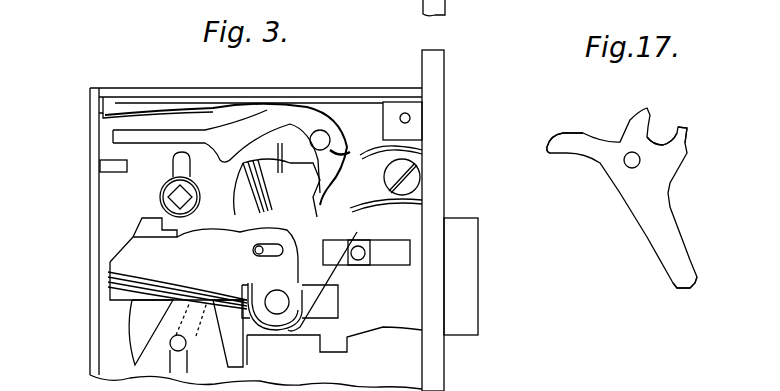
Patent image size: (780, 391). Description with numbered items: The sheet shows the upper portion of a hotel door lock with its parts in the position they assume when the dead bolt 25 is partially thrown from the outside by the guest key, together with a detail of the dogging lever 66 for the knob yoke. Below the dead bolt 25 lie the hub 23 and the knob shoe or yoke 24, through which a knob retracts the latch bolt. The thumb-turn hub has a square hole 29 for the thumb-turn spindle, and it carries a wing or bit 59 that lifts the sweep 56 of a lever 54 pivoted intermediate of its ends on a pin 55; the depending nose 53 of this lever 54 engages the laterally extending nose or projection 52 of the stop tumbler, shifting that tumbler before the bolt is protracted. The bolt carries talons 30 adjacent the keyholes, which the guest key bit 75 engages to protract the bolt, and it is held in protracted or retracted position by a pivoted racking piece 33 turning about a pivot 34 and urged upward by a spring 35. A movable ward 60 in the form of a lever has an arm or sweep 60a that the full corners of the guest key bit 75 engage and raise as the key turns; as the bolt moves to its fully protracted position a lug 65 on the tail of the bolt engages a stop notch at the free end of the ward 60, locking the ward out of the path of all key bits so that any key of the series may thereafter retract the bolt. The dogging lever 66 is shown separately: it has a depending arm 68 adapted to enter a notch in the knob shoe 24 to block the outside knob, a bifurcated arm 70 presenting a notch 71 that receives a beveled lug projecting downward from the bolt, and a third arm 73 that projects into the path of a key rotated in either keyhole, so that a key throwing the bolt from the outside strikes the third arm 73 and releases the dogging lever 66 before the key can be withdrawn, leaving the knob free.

In FIG. 3, the hub 23 is at (93, 14).
In FIG. 3, the knob shoe or yoke 24 is at (183, 0).
In FIG. 3, the dead bolt 25 is at (470, 282).
In FIG. 3, the square hole 29 is at (162, 202).
In FIG. 3, the talons 30 is at (157, 327).
In FIG. 3, the racking piece 33 is at (398, 152).
In FIG. 3, the pivot 34 is at (405, 180).
In FIG. 3, the spring 35 is at (420, 210).
In FIG. 3, the nose or projection 52 is at (335, 223).
In FIG. 3, the depending nose 53 is at (356, 137).
In FIG. 3, the lever 54 is at (270, 118).
In FIG. 3, the pin 55 is at (320, 130).
In FIG. 3, the sweep 56 is at (115, 131).
In FIG. 3, the wing or bit 59 is at (175, 163).
In FIG. 3, the movable ward 60 is at (204, 264).
In FIG. 3, the arm or sweep 60a is at (140, 263).
In FIG. 3, the lug 65 is at (140, 248).
In FIG. 3, the guest key bit 75 is at (194, 337).
In FIG. 17, the dogging lever 66 is at (660, 213).
In FIG. 17, the depending arm 68 is at (687, 277).
In FIG. 17, the bifurcated arm 70 is at (684, 136).
In FIG. 17, the notch 71 is at (658, 126).
In FIG. 17, the third arm 73 is at (572, 147).